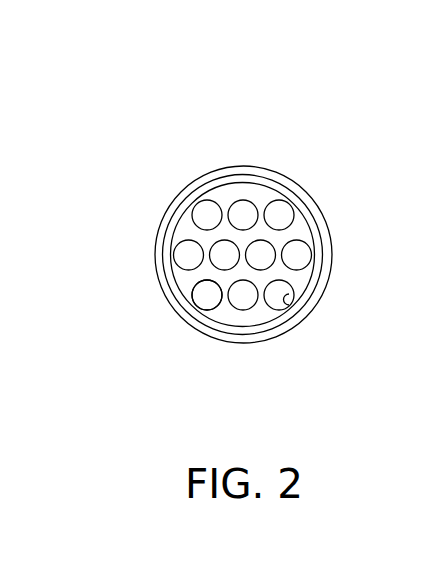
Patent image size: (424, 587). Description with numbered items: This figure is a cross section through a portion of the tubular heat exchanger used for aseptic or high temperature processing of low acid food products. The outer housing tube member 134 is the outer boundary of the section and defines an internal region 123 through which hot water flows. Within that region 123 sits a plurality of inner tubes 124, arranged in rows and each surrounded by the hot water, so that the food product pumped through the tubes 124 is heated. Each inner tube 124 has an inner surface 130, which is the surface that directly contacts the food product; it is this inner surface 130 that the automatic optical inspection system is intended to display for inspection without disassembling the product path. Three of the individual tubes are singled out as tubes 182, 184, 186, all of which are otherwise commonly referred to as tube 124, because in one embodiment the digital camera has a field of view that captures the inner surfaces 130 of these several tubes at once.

The outer housing tube member 134 is at (289, 140).
The inner surface 130 is at (293, 298).
The internal region 123 is at (225, 312).
The inner tube 124 is at (202, 212).
The tube 184 is at (245, 300).
The tube 186 is at (206, 306).
The tube 182 is at (290, 296).